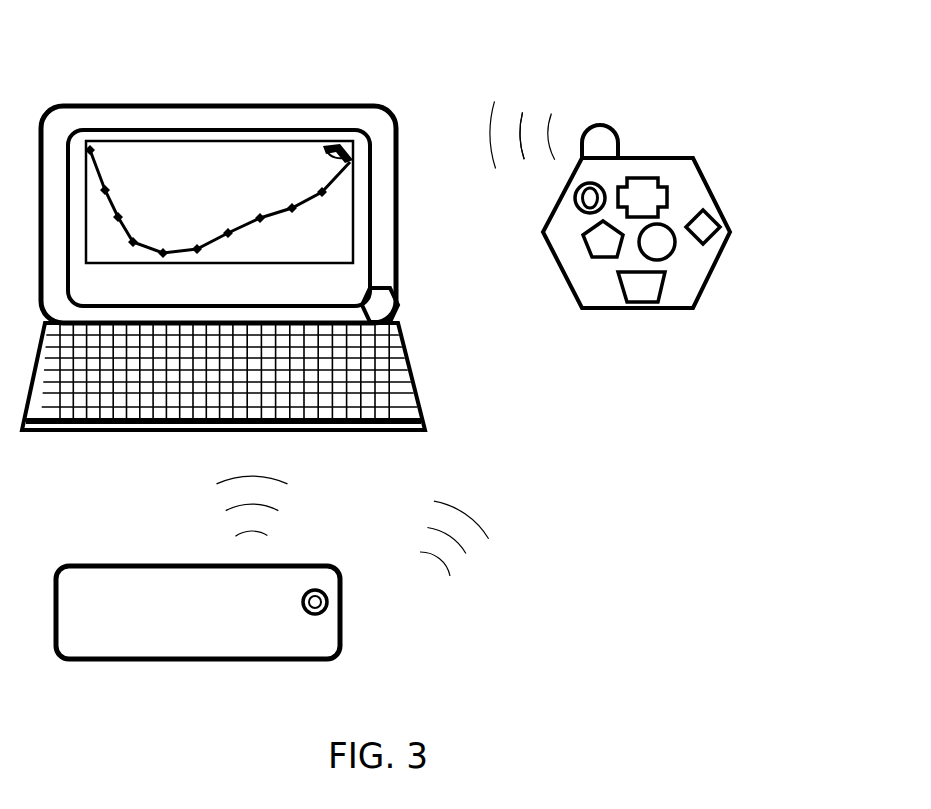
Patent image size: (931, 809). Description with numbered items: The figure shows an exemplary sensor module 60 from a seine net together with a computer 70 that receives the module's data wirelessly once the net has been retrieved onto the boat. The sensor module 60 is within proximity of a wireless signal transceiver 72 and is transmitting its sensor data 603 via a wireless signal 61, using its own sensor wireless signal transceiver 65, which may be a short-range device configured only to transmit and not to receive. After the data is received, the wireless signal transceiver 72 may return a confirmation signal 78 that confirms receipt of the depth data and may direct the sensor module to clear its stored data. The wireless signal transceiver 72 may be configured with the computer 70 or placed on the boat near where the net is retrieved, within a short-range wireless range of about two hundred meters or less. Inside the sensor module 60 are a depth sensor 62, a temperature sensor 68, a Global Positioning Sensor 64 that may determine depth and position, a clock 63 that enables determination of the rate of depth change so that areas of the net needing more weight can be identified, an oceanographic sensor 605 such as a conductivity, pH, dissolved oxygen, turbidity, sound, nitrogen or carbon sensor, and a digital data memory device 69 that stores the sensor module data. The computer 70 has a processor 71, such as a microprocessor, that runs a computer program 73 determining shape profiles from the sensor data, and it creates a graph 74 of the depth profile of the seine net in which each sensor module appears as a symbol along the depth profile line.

The computer 70 is at (313, 108).
The computer program 73 is at (379, 140).
The graph 74 is at (226, 234).
The processor 71 is at (383, 308).
The wireless signal transceiver 72 is at (316, 592).
The confirmation signal 78 is at (479, 512).
The sensor module 60 is at (655, 163).
The wireless signal 61 is at (525, 122).
The sensor data 603 is at (522, 125).
The sensor wireless signal transceiver 65 is at (595, 145).
The oceanographic sensor 605 is at (580, 194).
The temperature sensor 68 is at (645, 198).
The Global Positioning Sensor 64 is at (702, 230).
The digital data memory device 69 is at (592, 253).
The clock 63 is at (660, 244).
The depth sensor 62 is at (645, 282).